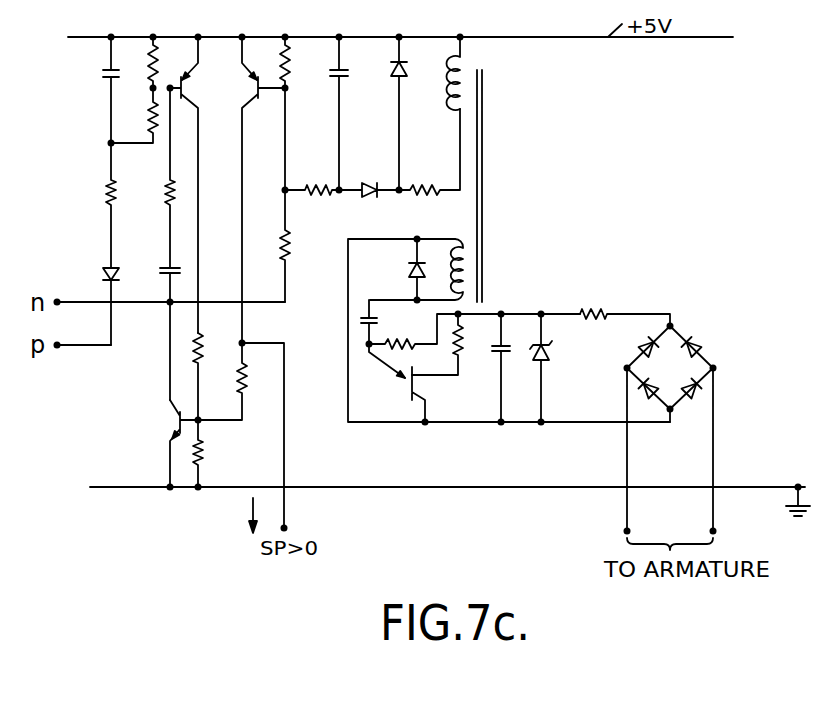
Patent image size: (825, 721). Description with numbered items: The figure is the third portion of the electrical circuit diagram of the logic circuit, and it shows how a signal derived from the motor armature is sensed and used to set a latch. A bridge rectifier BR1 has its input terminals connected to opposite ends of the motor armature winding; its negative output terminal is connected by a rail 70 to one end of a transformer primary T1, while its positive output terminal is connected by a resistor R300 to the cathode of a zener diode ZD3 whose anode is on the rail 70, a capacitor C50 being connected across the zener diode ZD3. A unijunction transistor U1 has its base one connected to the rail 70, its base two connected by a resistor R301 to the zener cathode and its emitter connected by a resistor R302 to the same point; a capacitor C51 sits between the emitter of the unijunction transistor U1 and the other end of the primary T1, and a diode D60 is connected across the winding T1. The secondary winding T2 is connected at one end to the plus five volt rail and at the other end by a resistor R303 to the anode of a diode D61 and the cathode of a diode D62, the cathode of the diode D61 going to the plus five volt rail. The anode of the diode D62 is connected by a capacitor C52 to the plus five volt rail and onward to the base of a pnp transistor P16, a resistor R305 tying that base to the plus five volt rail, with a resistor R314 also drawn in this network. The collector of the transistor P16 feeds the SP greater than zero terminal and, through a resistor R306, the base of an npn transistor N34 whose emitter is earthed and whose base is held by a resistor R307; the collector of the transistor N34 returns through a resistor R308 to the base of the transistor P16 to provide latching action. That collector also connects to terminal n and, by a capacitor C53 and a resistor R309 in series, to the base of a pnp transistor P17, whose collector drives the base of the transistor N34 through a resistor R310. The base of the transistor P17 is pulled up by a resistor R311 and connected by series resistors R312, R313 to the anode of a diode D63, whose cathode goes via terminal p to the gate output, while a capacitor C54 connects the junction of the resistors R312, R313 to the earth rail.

The capacitor C54 is at (98, 74).
The resistor R311 is at (164, 76).
The resistor R312 is at (147, 105).
The resistor R313 is at (105, 184).
The diode D63 is at (98, 272).
The resistor R309 is at (162, 200).
The capacitor C53 is at (158, 269).
The pnp transistor P17 is at (186, 85).
The pnp transistor P16 is at (250, 78).
The resistor R305 is at (290, 58).
The resistor R308 is at (288, 238).
The resistor R310 is at (206, 350).
The resistor R306 is at (238, 373).
The npn transistor N34 is at (178, 415).
The resistor R307 is at (203, 448).
The resistor R314 is at (330, 195).
The diode D62 is at (365, 178).
The resistor R303 is at (440, 194).
The capacitor C52 is at (345, 68).
The diode D61 is at (391, 70).
The secondary winding T2 is at (467, 68).
The transformer primary T1 is at (473, 268).
The rail 70 is at (473, 426).
The diode D60 is at (407, 270).
The capacitor C51 is at (363, 315).
The resistor R302 is at (408, 325).
The resistor R301 is at (462, 335).
The unijunction transistor U1 is at (407, 390).
The capacitor C50 is at (509, 352).
The zener diode ZD3 is at (557, 355).
The resistor R300 is at (598, 307).
The bridge rectifier BR1 is at (680, 373).